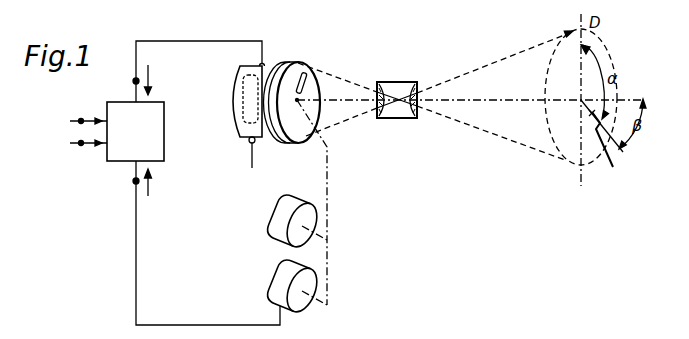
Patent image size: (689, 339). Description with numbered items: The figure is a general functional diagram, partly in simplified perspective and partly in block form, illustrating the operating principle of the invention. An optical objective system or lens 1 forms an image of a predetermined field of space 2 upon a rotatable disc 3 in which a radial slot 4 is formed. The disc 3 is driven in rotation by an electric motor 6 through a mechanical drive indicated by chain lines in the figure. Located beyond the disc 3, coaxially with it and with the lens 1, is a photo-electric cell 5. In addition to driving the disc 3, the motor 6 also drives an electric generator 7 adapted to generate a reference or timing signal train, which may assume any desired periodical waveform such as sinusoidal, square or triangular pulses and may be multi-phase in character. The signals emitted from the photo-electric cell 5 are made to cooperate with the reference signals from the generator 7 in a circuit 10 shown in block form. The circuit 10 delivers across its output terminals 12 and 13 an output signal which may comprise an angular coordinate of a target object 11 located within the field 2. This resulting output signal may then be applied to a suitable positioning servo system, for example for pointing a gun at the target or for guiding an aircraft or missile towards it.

The optical objective system or lens 1 is at (394, 82).
The predetermined field of space 2 is at (548, 128).
The rotatable disc 3 is at (291, 71).
The radial slot 4 is at (306, 80).
The photo-electric cell 5 is at (240, 100).
The electric motor 6 is at (275, 215).
The electric generator 7 is at (278, 282).
The circuit 10 is at (158, 123).
The target object 11 is at (614, 147).
The output terminal 12 is at (76, 117).
The output terminal 13 is at (76, 140).